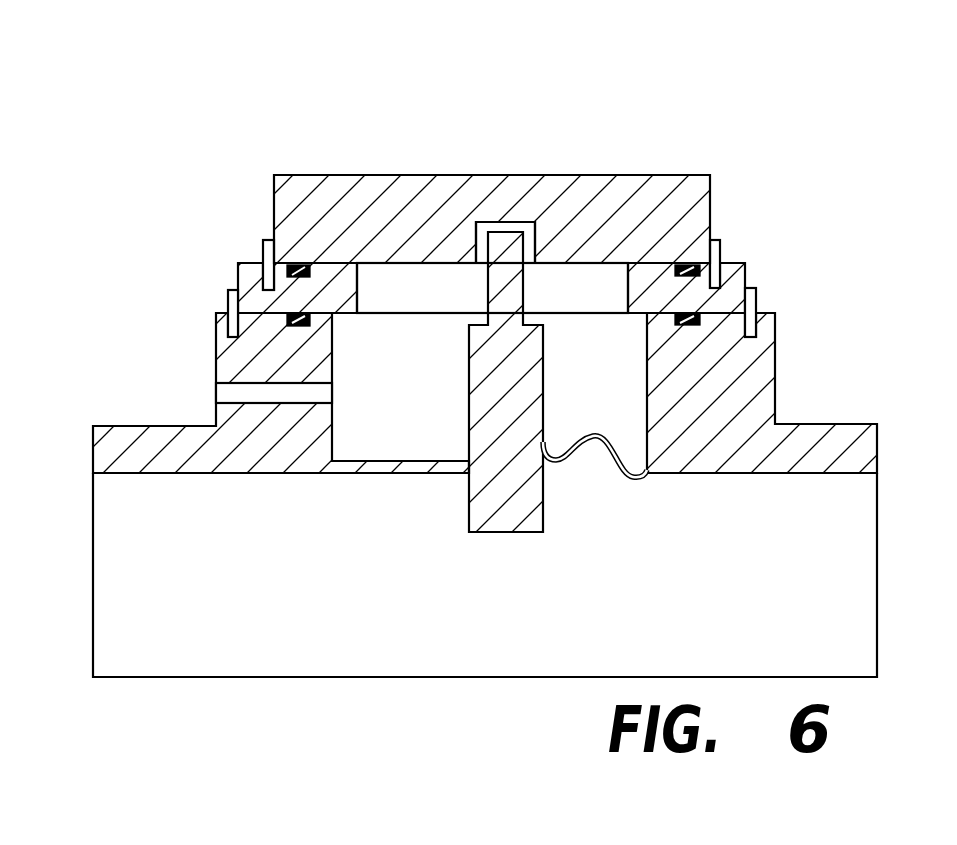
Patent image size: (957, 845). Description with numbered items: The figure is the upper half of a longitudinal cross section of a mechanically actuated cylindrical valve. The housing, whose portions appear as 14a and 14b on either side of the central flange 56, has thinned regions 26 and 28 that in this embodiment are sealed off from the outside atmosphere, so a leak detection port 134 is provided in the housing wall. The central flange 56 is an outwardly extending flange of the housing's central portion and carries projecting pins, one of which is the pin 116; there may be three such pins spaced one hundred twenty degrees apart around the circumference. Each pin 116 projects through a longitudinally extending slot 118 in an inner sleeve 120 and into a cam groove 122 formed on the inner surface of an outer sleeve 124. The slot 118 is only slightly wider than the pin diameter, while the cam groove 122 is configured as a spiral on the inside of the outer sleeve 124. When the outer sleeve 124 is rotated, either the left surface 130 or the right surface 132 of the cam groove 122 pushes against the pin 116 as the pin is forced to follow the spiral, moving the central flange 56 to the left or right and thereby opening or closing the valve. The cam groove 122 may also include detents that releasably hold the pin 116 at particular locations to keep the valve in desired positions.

The housing left portion 14a is at (153, 503).
The housing right portion 14b is at (754, 498).
The thinned region 26 is at (405, 477).
The thinned region 28 is at (575, 465).
The central flange 56 is at (470, 374).
The projecting pin 116 is at (583, 262).
The longitudinally extending slot 118 is at (420, 287).
The inner sleeve 120 is at (253, 285).
The cam groove 122 is at (512, 140).
The outer sleeve 124 is at (310, 208).
The left surface 130 is at (470, 240).
The right surface 132 is at (542, 242).
The leak detection port 134 is at (247, 397).